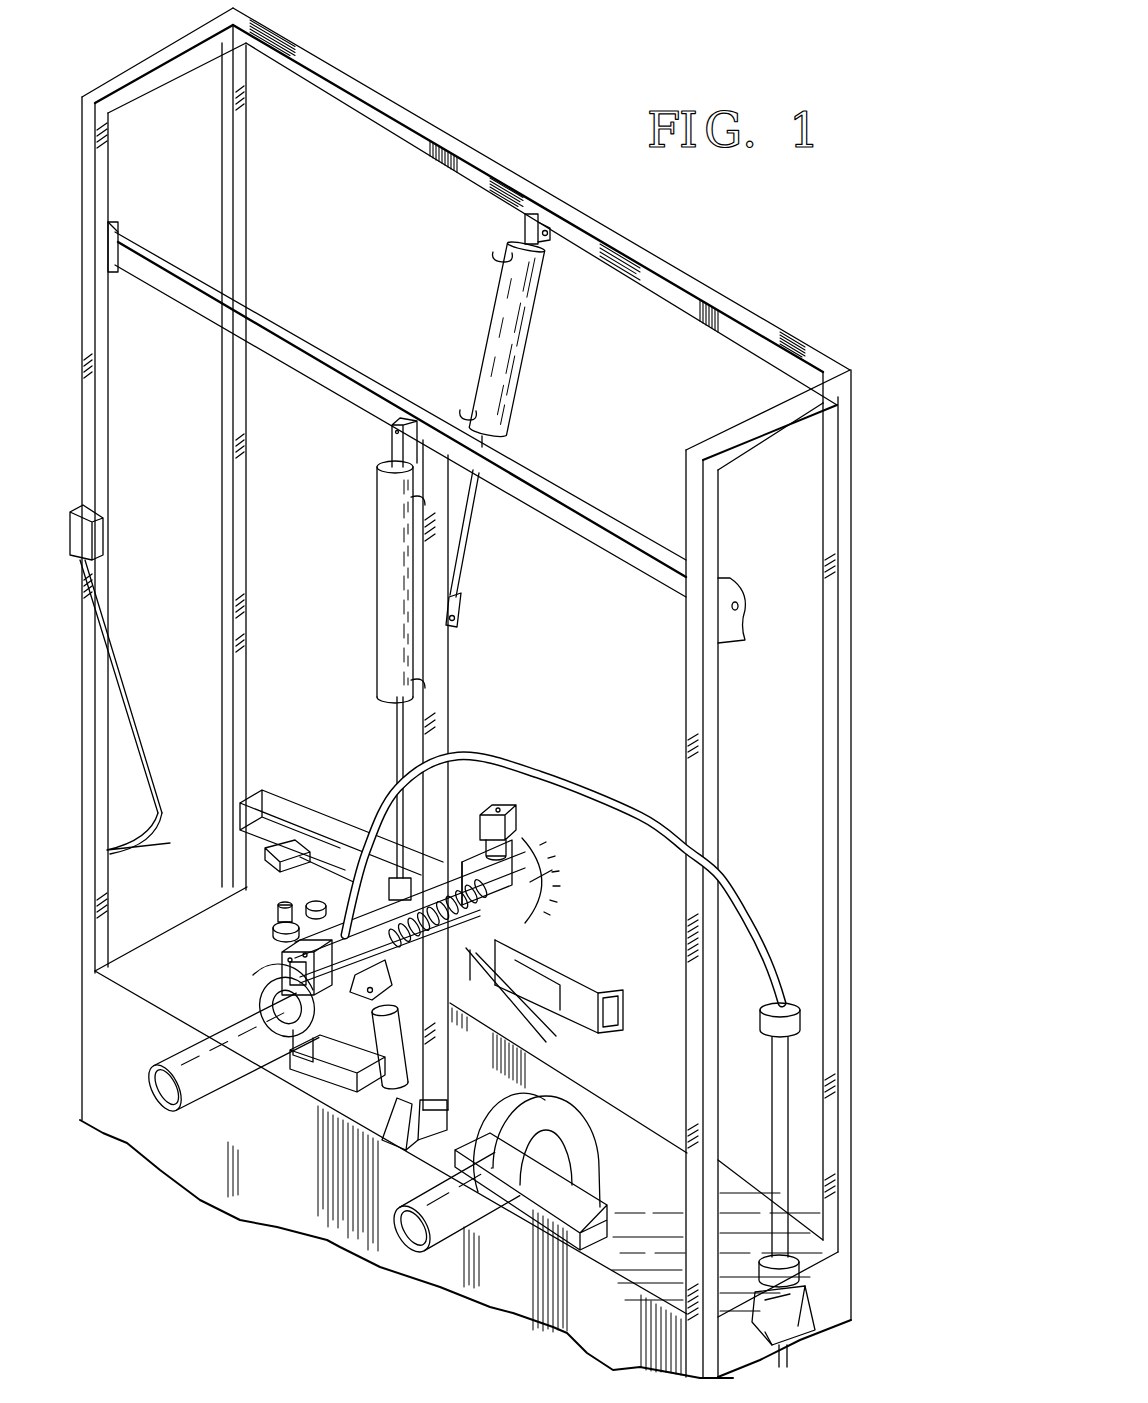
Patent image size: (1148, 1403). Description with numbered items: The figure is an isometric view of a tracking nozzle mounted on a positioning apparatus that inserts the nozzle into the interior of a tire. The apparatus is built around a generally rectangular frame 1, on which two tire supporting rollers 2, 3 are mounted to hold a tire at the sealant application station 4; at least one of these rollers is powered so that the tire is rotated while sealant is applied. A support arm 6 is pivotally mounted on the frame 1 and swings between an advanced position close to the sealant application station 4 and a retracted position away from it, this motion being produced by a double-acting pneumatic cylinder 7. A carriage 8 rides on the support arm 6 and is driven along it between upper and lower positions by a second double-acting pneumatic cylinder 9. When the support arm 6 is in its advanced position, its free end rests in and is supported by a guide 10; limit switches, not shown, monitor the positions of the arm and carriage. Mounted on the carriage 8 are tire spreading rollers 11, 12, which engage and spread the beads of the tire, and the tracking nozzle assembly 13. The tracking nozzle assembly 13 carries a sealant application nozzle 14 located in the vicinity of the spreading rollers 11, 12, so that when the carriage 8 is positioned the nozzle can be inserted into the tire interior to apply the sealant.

The frame 1 is at (852, 372).
The tire supporting roller 2 is at (203, 1088).
The tire supporting roller 3 is at (432, 1204).
The sealant application station 4 is at (287, 1186).
The support arm 6 is at (440, 662).
The double-acting pneumatic cylinder 7 is at (510, 378).
The carriage 8 is at (450, 856).
The double-acting pneumatic cylinder 9 is at (392, 592).
The guide 10 is at (442, 1107).
The tire spreading roller 11 is at (297, 1050).
The tire spreading roller 12 is at (347, 999).
The tracking nozzle assembly 13 is at (412, 968).
The sealant application nozzle 14 is at (273, 960).